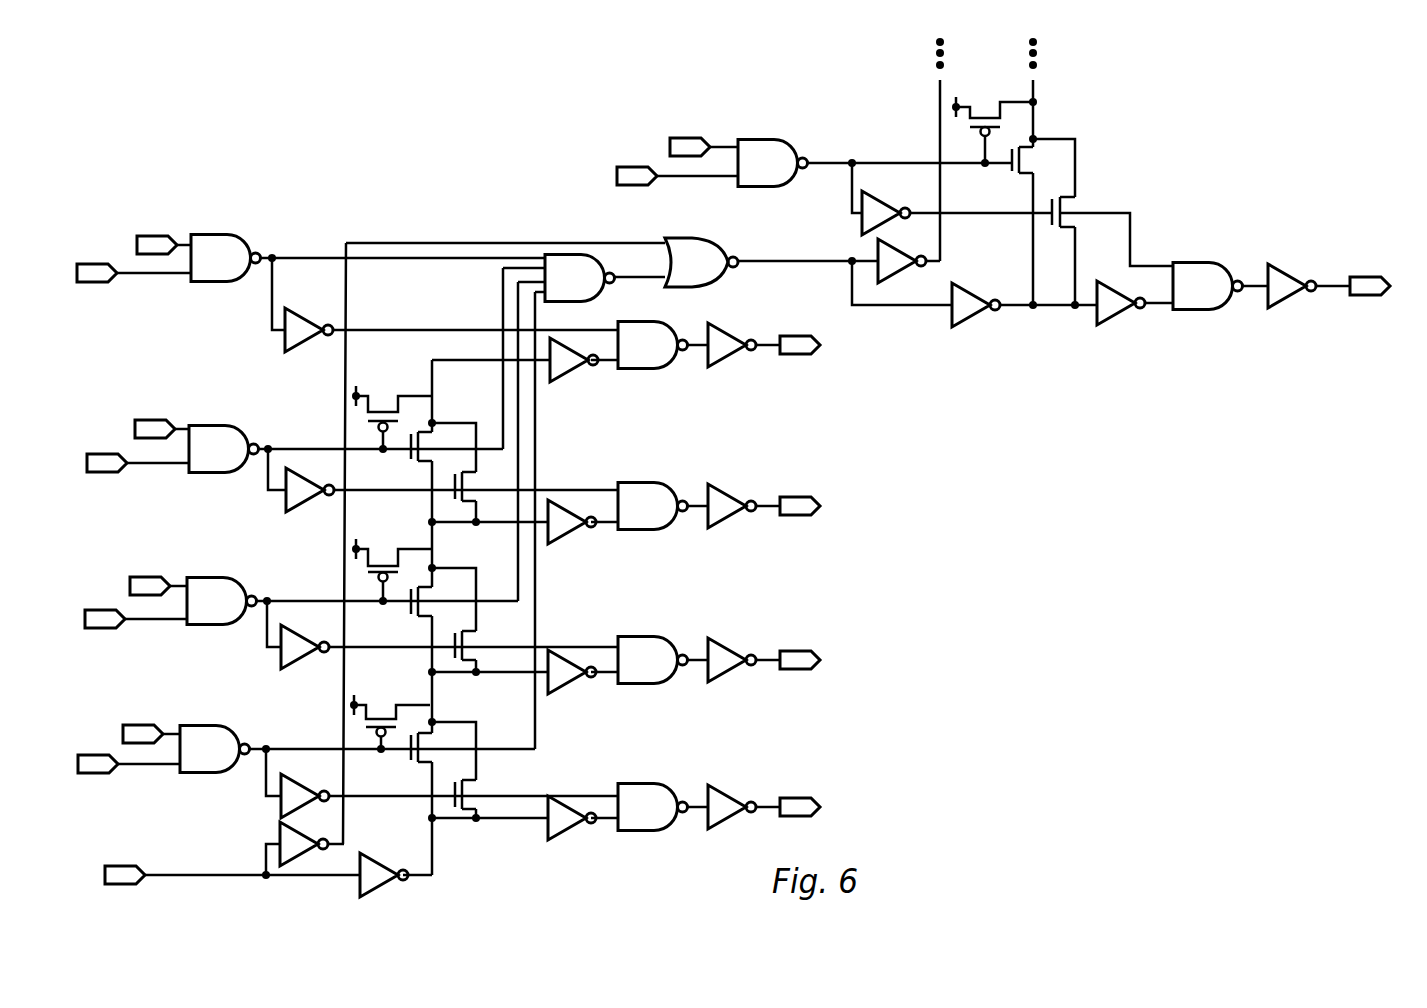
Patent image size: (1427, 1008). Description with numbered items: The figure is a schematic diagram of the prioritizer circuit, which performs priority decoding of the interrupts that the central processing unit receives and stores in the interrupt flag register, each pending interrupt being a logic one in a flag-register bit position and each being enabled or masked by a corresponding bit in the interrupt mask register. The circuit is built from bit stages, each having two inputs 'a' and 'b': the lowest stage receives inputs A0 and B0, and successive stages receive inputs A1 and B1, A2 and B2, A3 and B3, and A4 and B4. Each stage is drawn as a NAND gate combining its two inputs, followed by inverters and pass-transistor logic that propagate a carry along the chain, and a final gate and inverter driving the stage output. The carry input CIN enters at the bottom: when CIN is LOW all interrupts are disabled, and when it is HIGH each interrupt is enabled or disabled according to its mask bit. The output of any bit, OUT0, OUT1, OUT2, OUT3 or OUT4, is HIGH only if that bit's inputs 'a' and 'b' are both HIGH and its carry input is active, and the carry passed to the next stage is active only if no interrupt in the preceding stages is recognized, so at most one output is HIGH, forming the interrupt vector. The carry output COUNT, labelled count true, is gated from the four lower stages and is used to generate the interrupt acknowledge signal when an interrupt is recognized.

The input a of bit three A3 is at (134, 261).
The input b of bit three B3 is at (164, 232).
The input a of bit two A2 is at (138, 451).
The input b of bit two B2 is at (162, 416).
The input a of bit one A1 is at (136, 607).
The input b of bit one B1 is at (158, 573).
The input a of bit zero A0 is at (129, 752).
The input b of bit zero B0 is at (151, 721).
The input a of bit four A4 is at (677, 164).
The input b of bit four B4 is at (704, 134).
The carry input CIN is at (230, 851).
The carry output (count true) COUNT is at (771, 261).
The output out0 OUT0 is at (795, 790).
The output out1 OUT1 is at (795, 644).
The output out2 OUT2 is at (795, 489).
The output out3 OUT3 is at (795, 329).
The output out4 OUT4 is at (1360, 270).